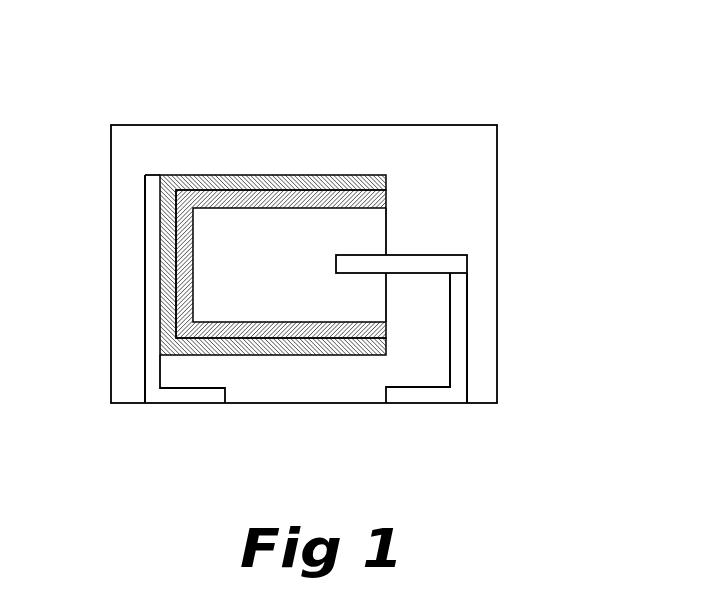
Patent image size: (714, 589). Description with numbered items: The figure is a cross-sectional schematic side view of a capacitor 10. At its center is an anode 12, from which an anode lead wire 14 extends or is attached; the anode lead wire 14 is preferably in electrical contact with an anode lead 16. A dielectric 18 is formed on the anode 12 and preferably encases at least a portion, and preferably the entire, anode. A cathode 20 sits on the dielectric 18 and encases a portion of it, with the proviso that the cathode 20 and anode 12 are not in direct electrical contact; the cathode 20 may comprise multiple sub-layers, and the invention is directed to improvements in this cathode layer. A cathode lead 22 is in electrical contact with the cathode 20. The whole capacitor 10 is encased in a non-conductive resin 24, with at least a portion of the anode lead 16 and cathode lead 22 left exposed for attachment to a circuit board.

The capacitor 10 is at (393, 112).
The anode 12 is at (348, 240).
The anode lead wire 14 is at (403, 266).
The anode lead 16 is at (457, 313).
The dielectric 18 is at (333, 185).
The cathode 20 is at (248, 182).
The cathode lead 22 is at (150, 287).
The non-conductive resin 24 is at (163, 150).